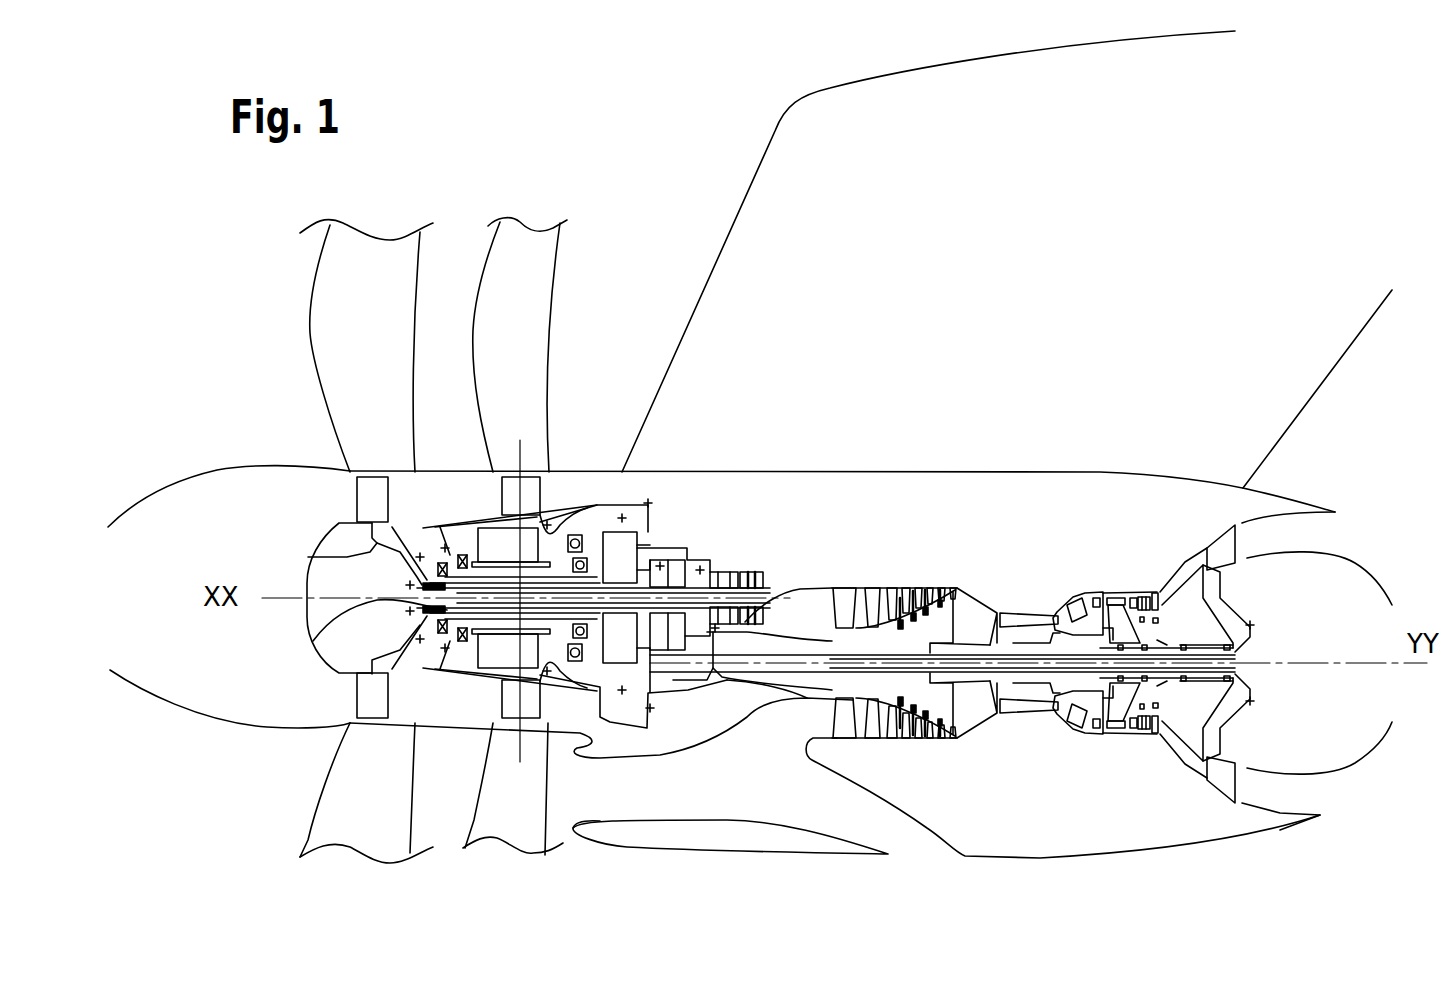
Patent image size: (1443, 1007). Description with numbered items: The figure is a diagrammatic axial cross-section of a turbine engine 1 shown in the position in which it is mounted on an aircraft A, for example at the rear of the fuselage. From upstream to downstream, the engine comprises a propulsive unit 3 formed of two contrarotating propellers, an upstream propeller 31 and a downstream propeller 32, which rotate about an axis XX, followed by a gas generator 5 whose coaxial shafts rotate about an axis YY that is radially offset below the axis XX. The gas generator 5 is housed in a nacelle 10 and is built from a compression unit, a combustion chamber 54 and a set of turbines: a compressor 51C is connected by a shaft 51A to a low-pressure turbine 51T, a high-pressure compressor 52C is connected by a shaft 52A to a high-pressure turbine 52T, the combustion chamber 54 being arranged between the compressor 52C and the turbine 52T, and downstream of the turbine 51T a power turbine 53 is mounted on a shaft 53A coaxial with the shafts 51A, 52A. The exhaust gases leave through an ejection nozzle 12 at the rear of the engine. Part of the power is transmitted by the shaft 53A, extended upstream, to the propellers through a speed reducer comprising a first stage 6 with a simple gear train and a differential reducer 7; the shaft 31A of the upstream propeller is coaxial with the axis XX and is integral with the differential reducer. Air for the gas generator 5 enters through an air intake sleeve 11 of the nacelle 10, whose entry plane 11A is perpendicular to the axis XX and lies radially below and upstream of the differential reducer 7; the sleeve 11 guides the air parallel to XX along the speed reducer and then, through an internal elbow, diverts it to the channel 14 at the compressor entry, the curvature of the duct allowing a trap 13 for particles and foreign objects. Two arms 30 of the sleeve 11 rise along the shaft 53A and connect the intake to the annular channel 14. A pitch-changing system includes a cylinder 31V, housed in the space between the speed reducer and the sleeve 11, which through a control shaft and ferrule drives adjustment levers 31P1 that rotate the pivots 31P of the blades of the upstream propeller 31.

The turbine engine 1 is at (252, 447).
The propulsive unit 3 is at (299, 293).
The upstream propeller 31 is at (372, 342).
The downstream propeller 32 is at (525, 350).
The pivots 31P is at (367, 503).
The adjustment levers 31P1 is at (313, 557).
The shaft of the upstream propeller 31A is at (375, 598).
The cylinder 31V is at (720, 583).
The differential reducer 7 is at (622, 547).
The first stage with a simple gear train 6 is at (655, 550).
The arms 30 is at (787, 565).
The channel 14 is at (812, 603).
The gas generator 5 is at (938, 572).
The compressor 51C is at (898, 610).
The shaft 51A is at (932, 712).
The high-pressure compressor 52C is at (1037, 618).
The shaft 52A is at (1090, 720).
The combustion chamber 54 is at (1073, 605).
The high-pressure turbine 52T is at (1103, 600).
The low-pressure turbine 51T is at (1153, 592).
The power turbine 53 is at (1223, 552).
The shaft 53A is at (772, 662).
The trap 13 is at (850, 805).
The air intake sleeve 11 is at (715, 782).
The entry plane 11A is at (600, 813).
The nacelle 10 is at (1192, 847).
The ejection nozzle 12 is at (1302, 792).
The aircraft A is at (922, 270).